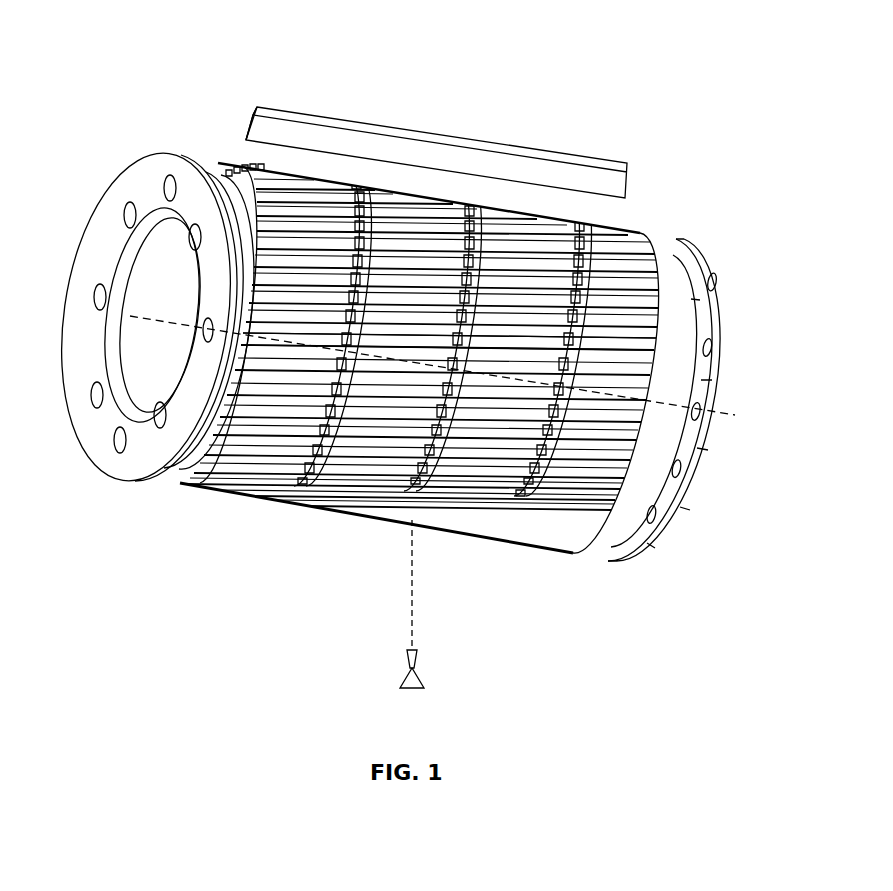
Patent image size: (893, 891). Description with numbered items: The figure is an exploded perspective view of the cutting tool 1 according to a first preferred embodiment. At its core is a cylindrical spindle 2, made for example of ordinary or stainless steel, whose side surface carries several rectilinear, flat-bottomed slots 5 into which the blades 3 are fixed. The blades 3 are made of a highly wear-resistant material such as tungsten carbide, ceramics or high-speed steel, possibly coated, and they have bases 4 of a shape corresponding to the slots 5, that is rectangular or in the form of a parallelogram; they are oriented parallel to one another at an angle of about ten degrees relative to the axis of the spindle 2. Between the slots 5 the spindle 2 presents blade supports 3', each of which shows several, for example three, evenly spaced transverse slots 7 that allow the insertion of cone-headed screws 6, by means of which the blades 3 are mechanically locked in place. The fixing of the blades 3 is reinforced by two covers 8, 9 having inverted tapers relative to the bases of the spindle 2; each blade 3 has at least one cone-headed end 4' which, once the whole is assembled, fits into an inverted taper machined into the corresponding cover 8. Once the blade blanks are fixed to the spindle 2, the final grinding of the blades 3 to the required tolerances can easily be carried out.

The cutting tool 1 is at (672, 210).
The cylindrical spindle 2 is at (305, 507).
The blades 3 is at (436, 114).
The blade supports 3' is at (526, 292).
The bases 4 is at (199, 100).
The cone-headed end 4' is at (221, 75).
The slots 5 is at (645, 332).
The cone-headed screws 6 is at (428, 660).
The transverse slots 7 is at (385, 523).
The cover 8 is at (122, 192).
The cover 9 is at (735, 350).